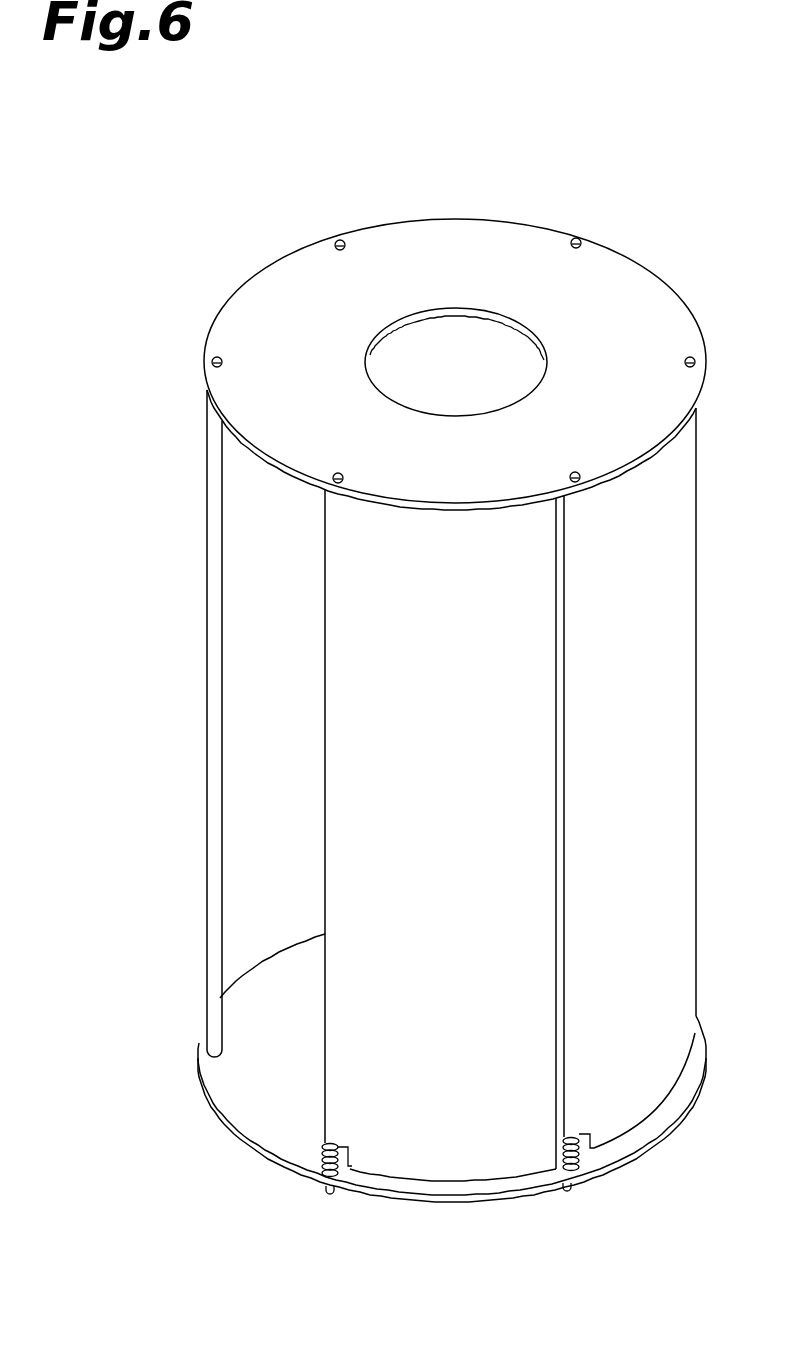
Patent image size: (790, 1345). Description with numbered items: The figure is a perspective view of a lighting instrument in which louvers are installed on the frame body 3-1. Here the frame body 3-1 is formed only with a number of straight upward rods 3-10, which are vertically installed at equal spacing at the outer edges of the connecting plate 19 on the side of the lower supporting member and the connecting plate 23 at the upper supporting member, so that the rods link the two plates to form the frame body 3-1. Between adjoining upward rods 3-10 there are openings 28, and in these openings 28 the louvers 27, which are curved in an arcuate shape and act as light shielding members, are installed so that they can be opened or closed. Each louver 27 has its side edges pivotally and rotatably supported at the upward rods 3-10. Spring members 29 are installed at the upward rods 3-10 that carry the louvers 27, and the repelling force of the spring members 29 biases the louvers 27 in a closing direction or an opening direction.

The frame body 3-1 is at (192, 661).
The connecting plate 23 is at (473, 238).
The opening 28 is at (255, 742).
The upward rod 3-10 is at (210, 848).
The connecting plate 19 is at (250, 1147).
The louver 27 is at (620, 1103).
The spring member 29 is at (350, 1160).